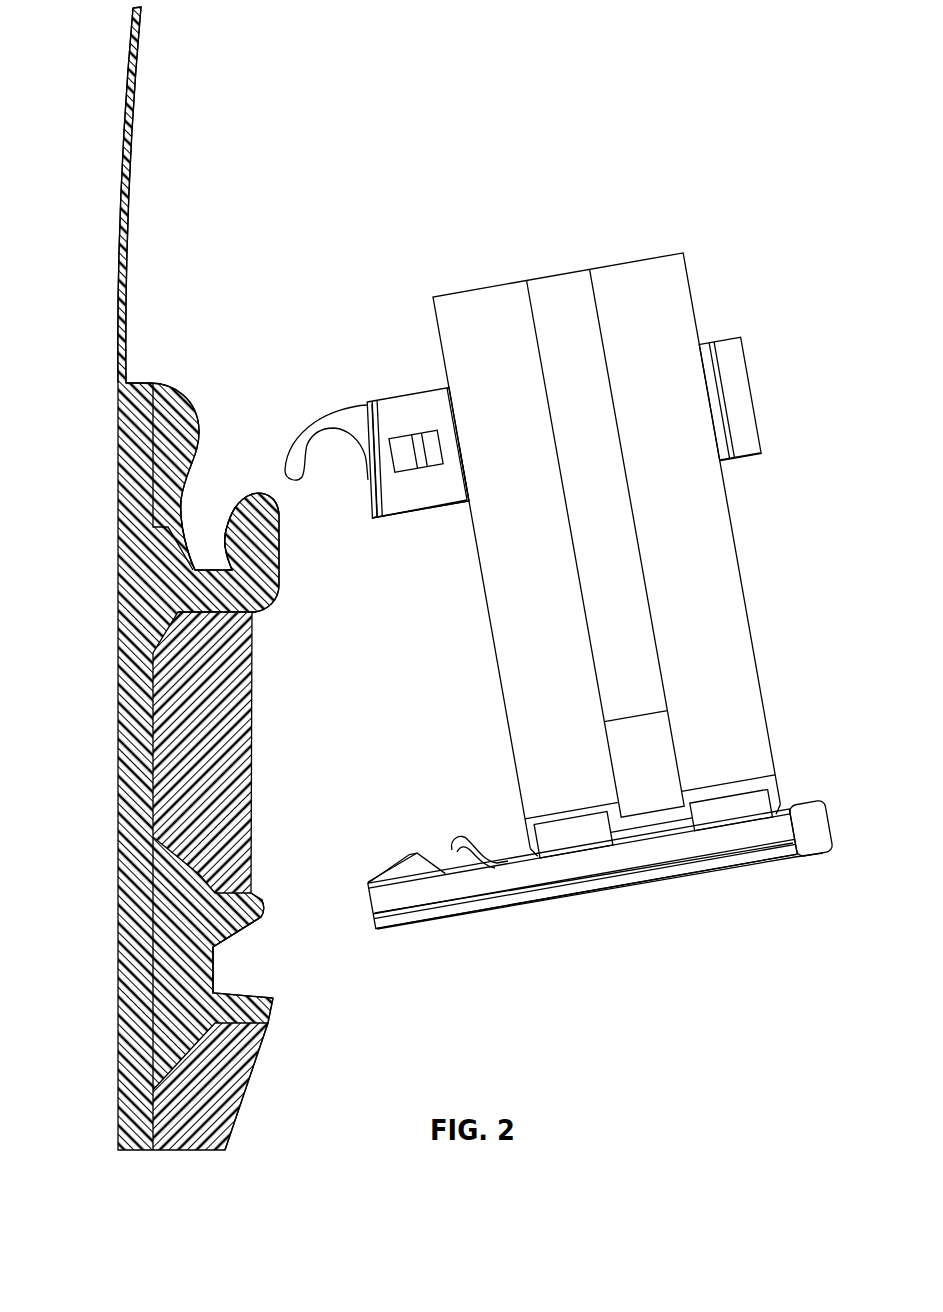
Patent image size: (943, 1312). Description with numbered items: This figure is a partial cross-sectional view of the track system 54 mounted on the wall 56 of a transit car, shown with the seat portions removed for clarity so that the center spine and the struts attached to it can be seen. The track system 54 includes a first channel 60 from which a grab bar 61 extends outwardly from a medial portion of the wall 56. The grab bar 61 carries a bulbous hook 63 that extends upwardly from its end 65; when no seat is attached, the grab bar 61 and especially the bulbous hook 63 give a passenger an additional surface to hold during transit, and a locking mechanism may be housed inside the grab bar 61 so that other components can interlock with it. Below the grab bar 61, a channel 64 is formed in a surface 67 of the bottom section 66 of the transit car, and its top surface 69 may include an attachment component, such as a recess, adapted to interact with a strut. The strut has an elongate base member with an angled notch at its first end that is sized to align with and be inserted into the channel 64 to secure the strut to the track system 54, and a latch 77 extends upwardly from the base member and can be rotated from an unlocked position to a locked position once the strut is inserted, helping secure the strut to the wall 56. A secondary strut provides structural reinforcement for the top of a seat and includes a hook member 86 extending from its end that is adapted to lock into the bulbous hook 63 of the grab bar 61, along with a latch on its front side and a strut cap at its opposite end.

The track system 54 is at (66, 202).
The wall 56 is at (132, 228).
The first channel 60 is at (166, 513).
The grab bar 61 is at (197, 572).
The bulbous hook 63 is at (252, 494).
The end 65 is at (281, 562).
The surface 67 is at (240, 914).
The top surface 69 is at (252, 927).
The channel 64 is at (252, 965).
The bottom section 66 is at (244, 1046).
The hook member 86 is at (302, 430).
The latch 77 is at (456, 836).